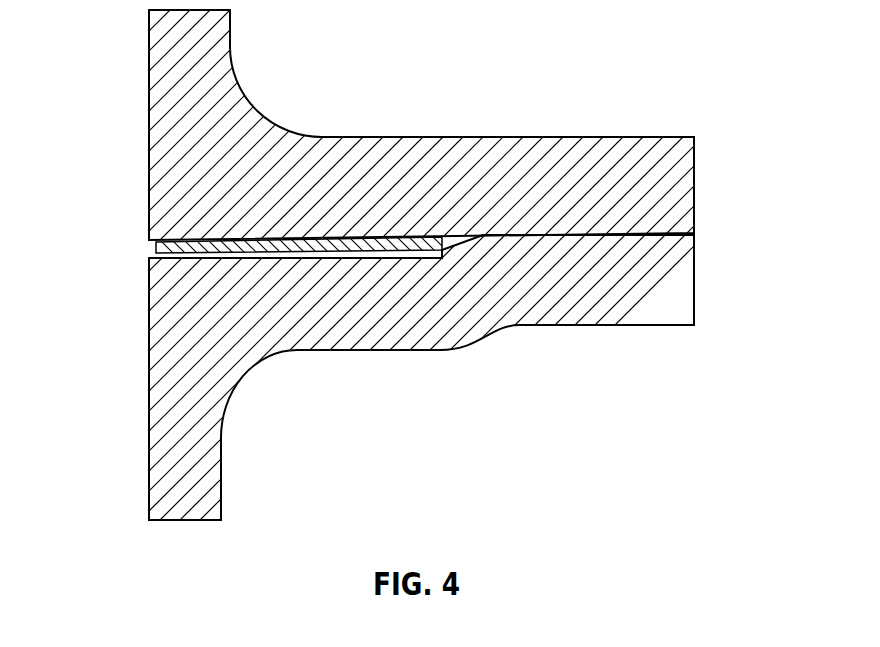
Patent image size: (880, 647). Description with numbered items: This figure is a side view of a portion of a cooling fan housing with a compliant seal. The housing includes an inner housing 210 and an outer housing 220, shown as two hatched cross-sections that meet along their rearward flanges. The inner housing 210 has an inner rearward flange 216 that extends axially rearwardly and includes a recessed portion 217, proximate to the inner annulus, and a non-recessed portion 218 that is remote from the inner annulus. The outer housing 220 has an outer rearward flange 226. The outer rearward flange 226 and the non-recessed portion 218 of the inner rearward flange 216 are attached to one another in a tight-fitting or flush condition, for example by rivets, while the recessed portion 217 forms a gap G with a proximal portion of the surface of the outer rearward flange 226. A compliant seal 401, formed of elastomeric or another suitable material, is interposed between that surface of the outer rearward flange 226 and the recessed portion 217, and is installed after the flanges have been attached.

The outer housing 220 is at (148, 43).
The inner housing 210 is at (148, 485).
The outer rearward flange 226 is at (577, 175).
The inner rearward flange 216 is at (662, 277).
The non-recessed portion 218 is at (570, 238).
The recessed portion 217 is at (323, 262).
The compliant seal 401 is at (233, 252).
The gap G is at (148, 253).